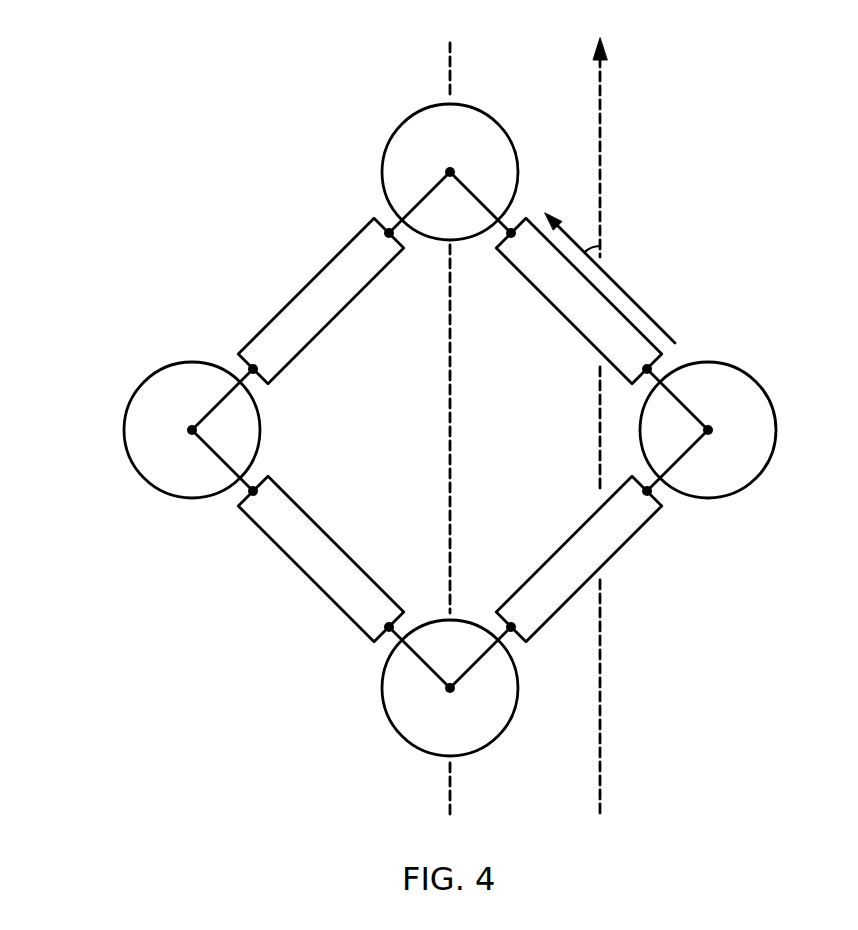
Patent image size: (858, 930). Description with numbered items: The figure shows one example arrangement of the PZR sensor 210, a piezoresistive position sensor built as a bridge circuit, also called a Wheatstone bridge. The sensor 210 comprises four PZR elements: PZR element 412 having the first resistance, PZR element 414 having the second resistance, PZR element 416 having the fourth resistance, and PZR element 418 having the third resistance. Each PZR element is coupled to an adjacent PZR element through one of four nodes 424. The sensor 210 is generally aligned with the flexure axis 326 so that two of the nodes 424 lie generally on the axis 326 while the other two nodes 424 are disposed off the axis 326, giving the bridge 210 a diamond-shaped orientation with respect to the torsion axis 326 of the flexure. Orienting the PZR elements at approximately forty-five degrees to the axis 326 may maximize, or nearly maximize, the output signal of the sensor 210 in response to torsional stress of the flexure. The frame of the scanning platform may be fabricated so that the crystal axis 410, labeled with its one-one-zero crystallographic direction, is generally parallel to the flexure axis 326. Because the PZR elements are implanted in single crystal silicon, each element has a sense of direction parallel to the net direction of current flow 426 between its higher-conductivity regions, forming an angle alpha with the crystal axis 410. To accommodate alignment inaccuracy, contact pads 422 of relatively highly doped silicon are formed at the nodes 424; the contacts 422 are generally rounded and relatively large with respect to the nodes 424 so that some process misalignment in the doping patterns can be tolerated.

The PZR sensor 210 is at (230, 224).
The flexure axis 326 is at (452, 66).
The crystal axis 410 is at (601, 137).
The PZR element 412 is at (527, 282).
The PZR element 414 is at (527, 580).
The PZR element 416 is at (347, 618).
The PZR element 418 is at (345, 243).
The contact pad 422 is at (398, 128).
The node 424 is at (450, 172).
The net direction of current flow 426 is at (648, 310).